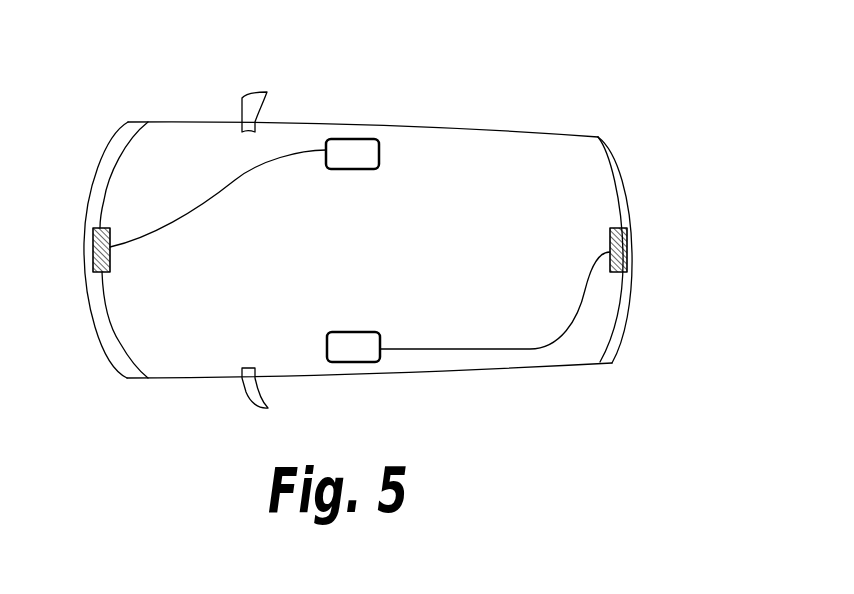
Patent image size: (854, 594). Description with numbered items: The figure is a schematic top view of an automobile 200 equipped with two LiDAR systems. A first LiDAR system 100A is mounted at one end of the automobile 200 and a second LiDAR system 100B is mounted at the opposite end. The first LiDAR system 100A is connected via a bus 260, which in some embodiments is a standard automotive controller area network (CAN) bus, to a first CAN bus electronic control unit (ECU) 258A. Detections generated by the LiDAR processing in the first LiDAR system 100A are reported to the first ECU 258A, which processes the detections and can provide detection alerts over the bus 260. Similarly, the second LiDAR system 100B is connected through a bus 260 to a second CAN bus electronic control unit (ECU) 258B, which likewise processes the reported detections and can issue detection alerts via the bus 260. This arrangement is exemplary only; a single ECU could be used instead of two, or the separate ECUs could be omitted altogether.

The automobile 200 is at (193, 84).
The first LiDAR system 100A is at (110, 258).
The second LiDAR system 100B is at (627, 250).
The first CAN bus electronic control unit 258A is at (357, 159).
The second CAN bus electronic control unit 258B is at (348, 338).
The bus 260 is at (222, 190).